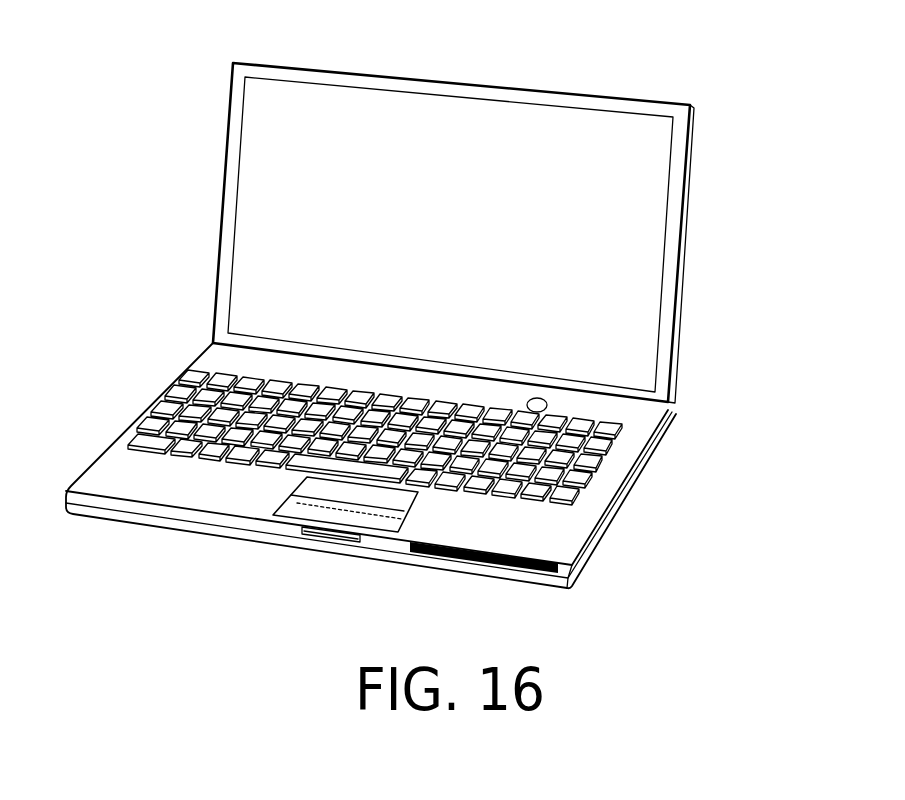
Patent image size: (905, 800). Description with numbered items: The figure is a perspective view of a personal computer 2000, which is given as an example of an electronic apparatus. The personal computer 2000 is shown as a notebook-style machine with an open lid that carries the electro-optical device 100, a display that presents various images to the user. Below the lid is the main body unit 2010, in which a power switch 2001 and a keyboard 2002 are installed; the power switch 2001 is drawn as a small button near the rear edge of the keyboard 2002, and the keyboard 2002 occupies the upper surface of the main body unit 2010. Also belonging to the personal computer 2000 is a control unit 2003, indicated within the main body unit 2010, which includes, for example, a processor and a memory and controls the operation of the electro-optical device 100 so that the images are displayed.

The electro-optical device 100 is at (559, 138).
The personal computer 2000 is at (166, 222).
The main body unit 2010 is at (97, 463).
The power switch 2001 is at (546, 400).
The keyboard 2002 is at (583, 483).
The control unit 2003 is at (583, 527).